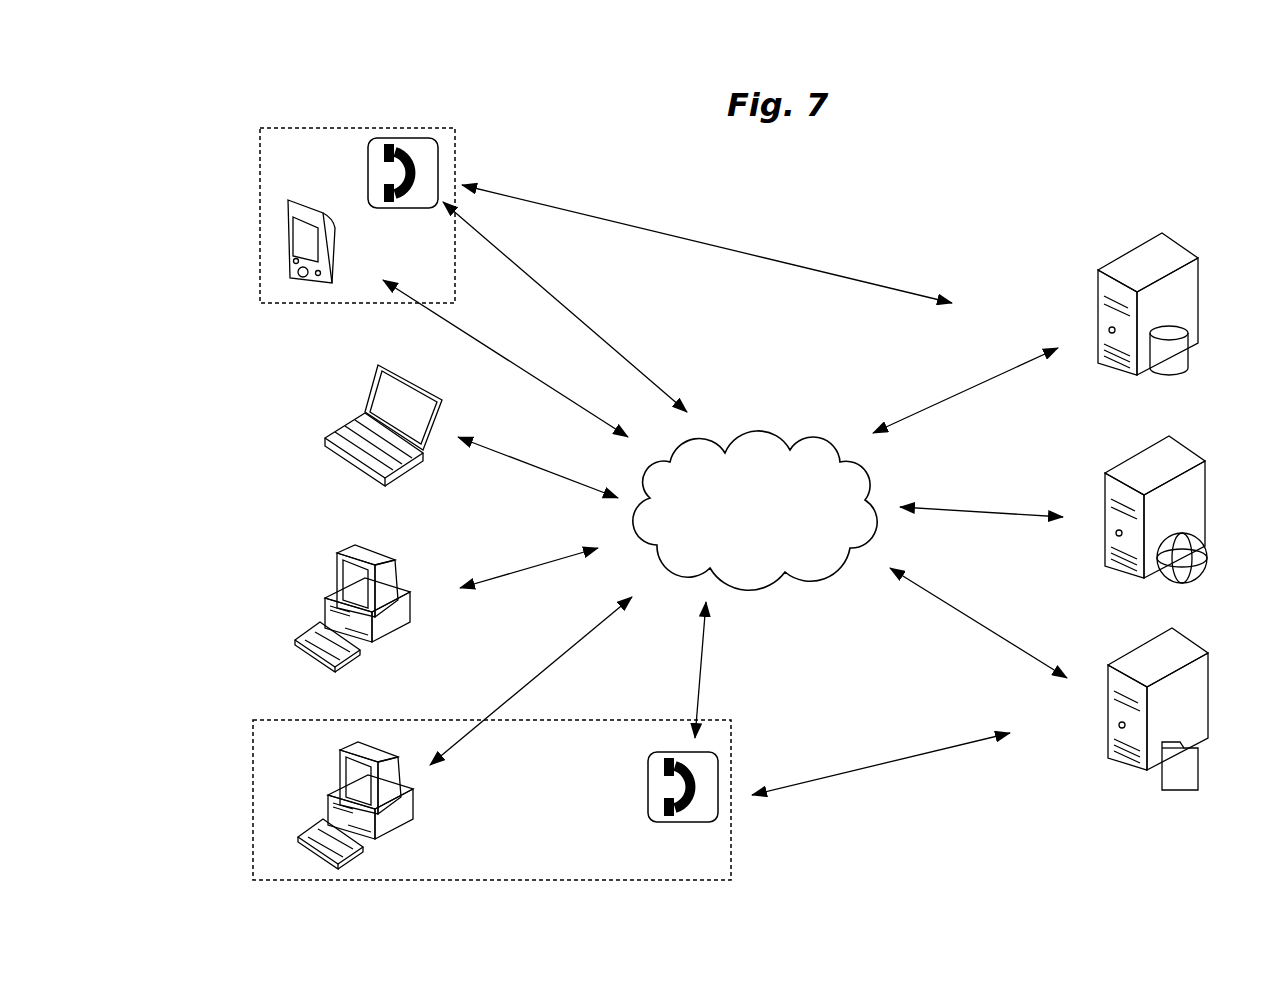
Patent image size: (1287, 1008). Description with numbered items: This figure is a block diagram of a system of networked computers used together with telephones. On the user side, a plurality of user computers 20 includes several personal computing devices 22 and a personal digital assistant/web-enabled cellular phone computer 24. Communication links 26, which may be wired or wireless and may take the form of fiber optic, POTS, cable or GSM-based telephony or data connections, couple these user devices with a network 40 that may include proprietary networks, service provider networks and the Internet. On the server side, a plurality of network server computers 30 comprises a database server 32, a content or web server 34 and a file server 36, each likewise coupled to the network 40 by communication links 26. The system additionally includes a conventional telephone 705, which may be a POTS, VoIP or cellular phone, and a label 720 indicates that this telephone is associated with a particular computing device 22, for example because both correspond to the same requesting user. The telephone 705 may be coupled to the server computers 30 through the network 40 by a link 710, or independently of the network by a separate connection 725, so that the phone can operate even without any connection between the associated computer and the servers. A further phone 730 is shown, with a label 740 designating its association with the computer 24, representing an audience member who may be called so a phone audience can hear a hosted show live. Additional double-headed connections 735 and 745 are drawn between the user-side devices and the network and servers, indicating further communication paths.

The user computers 20 is at (339, 195).
The personal computing devices 22 is at (335, 430).
The personal digital assistant/web-enabled cellular phone computer 24 is at (285, 223).
The communication links 26 is at (445, 320).
The network server computers 30 is at (1119, 492).
The database server 32 is at (1186, 250).
The content or web server 34 is at (1192, 452).
The file server 36 is at (1196, 645).
The network 40 is at (756, 432).
The conventional telephone 705 is at (718, 783).
The link 710 is at (702, 686).
The label 720 is at (731, 845).
The communication path independent of network 725 is at (882, 764).
The phone 730 is at (427, 150).
The communication link 735 is at (592, 328).
The label 740 is at (332, 128).
The communication link 745 is at (705, 243).